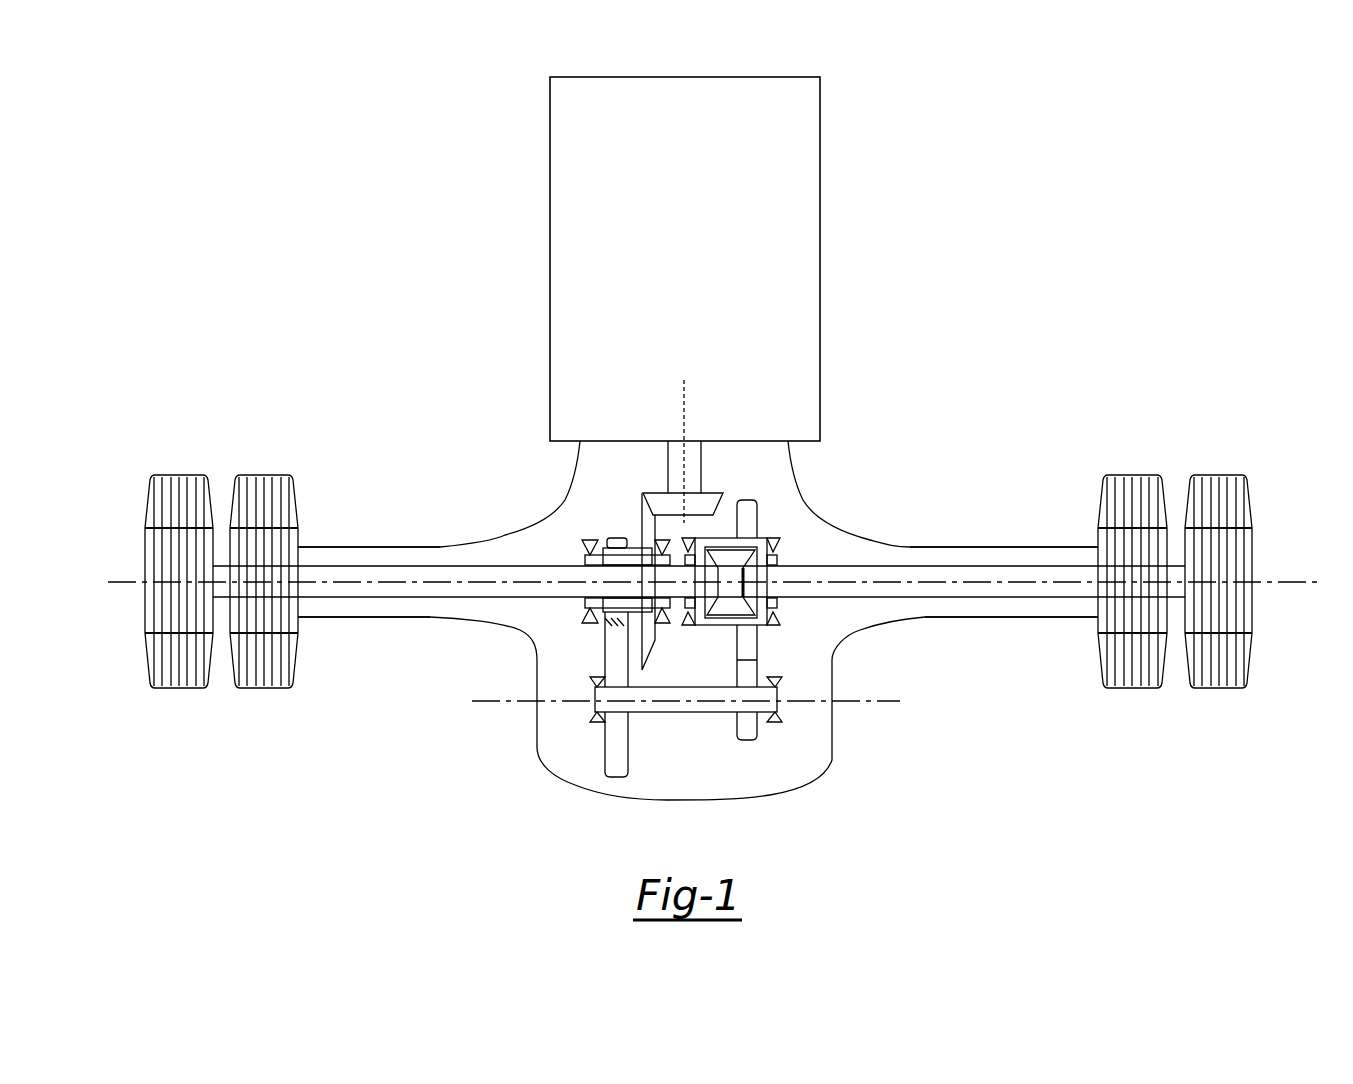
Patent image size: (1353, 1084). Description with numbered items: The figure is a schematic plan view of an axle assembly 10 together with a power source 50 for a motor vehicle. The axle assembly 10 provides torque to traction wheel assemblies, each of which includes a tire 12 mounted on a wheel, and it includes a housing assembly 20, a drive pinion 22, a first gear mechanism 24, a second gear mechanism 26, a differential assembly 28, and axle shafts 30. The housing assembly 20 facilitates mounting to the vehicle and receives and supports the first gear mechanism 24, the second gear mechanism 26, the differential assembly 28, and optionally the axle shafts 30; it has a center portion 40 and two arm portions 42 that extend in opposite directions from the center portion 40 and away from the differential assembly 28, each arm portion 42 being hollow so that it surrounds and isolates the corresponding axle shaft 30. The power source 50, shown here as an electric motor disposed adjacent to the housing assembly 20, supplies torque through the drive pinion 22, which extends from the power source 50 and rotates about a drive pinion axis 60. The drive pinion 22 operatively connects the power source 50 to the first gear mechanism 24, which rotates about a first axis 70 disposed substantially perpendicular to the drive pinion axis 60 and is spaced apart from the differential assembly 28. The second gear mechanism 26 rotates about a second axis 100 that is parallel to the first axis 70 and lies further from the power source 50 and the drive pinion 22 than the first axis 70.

The axle assembly 10 is at (468, 738).
The tire 12 is at (700, 545).
The housing assembly 20 is at (502, 534).
The drive pinion 22 is at (738, 480).
The first gear mechanism 24 is at (578, 606).
The second gear mechanism 26 is at (667, 720).
The differential assembly 28 is at (785, 548).
The axle shaft 30 is at (407, 599).
The center portion 40 is at (667, 801).
The arm portion 42 is at (368, 546).
The power source 50 is at (695, 293).
The drive pinion axis 60 is at (685, 383).
The first axis 70 is at (1303, 585).
The second axis 100 is at (878, 702).